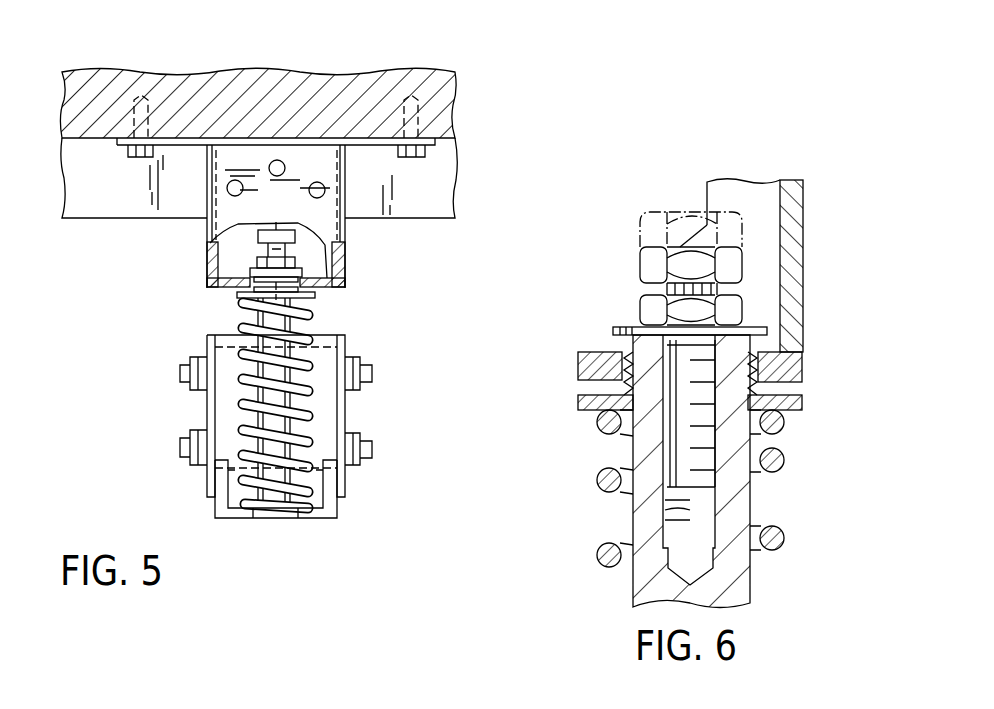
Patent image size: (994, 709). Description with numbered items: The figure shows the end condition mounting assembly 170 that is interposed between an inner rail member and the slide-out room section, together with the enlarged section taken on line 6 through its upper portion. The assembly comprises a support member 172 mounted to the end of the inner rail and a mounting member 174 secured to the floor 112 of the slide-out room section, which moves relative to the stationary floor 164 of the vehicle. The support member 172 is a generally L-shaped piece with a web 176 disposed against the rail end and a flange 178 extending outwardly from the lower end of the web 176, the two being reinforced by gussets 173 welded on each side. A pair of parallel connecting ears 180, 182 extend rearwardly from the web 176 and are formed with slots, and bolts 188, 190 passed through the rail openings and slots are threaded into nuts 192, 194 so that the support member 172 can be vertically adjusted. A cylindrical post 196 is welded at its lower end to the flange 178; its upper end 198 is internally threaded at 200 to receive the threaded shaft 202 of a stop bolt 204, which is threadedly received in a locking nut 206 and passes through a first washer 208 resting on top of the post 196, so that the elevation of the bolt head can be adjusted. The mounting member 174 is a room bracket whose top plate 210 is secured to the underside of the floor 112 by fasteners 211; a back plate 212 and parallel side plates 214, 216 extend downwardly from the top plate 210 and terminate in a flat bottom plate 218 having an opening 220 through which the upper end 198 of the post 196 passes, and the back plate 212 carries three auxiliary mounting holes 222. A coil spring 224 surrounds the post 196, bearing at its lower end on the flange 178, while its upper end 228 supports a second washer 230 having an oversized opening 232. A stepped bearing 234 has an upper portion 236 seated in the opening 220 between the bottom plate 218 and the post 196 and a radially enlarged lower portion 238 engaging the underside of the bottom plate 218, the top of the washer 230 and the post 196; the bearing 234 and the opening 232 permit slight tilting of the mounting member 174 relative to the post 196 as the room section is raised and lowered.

In FIG. 5, the floor 112 is at (257, 66).
In FIG. 5, the stationary floor 164 is at (434, 160).
In FIG. 5, the top plate 210 is at (303, 140).
In FIG. 5, the fasteners 211 is at (141, 160).
In FIG. 5, the section line 6- 6 is at (276, 195).
In FIG. 5, the mounting member 174 is at (357, 205).
In FIG. 6, the mounting member 174 is at (818, 178).
In FIG. 5, the auxiliary mounting holes 222 is at (316, 182).
In FIG. 5, the bottom plate 218 is at (346, 286).
In FIG. 6, the bottom plate 218 is at (762, 373).
In FIG. 5, the side plate 214 is at (211, 258).
In FIG. 5, the stop bolt 204 is at (296, 237).
In FIG. 6, the stop bolt 204 is at (732, 268).
In FIG. 5, the locking nut 206 is at (257, 262).
In FIG. 6, the locking nut 206 is at (650, 312).
In FIG. 5, the side plate 216 is at (346, 256).
In FIG. 5, the second washer 230 is at (248, 296).
In FIG. 6, the second washer 230 is at (802, 403).
In FIG. 5, the web 176 is at (326, 355).
In FIG. 5, the coil spring 224 is at (318, 396).
In FIG. 6, the coil spring 224 is at (786, 536).
In FIG. 5, the connecting ear 182 is at (340, 420).
In FIG. 5, the flange 178 is at (292, 518).
In FIG. 5, the gussets 173 is at (340, 506).
In FIG. 5, the bolt 188 is at (199, 356).
In FIG. 5, the connecting ear 180 is at (196, 440).
In FIG. 5, the bolt 190 is at (196, 456).
In FIG. 5, the nut 192 is at (370, 358).
In FIG. 5, the nut 194 is at (352, 468).
In FIG. 5, the end condition mounting assembly 170 is at (134, 408).
In FIG. 5, the support member 172 is at (356, 531).
In FIG. 6, the support member 172 is at (770, 606).
In FIG. 6, the back plate 212 is at (796, 228).
In FIG. 6, the first washer 208 is at (608, 328).
In FIG. 6, the opening 220 is at (640, 338).
In FIG. 6, the post 196 is at (755, 589).
In FIG. 6, the threaded shaft 202 is at (686, 428).
In FIG. 6, the internal threads 200 is at (666, 506).
In FIG. 6, the upper portion 236 is at (790, 320).
In FIG. 6, the stepped bearing 234 is at (782, 358).
In FIG. 6, the oversized opening 232 is at (632, 373).
In FIG. 6, the lower portion 238 is at (752, 392).
In FIG. 6, the upper end 228 is at (598, 418).
In FIG. 6, the upper end 198 is at (784, 478).